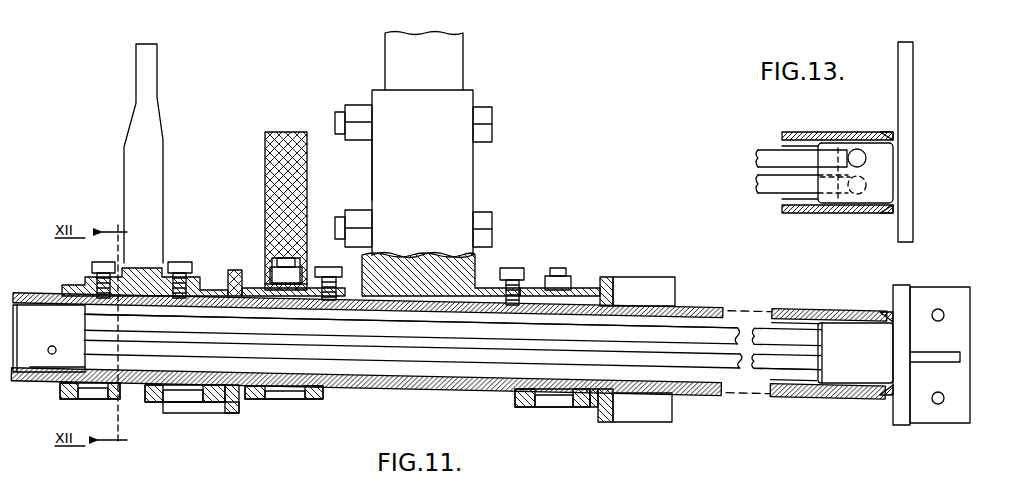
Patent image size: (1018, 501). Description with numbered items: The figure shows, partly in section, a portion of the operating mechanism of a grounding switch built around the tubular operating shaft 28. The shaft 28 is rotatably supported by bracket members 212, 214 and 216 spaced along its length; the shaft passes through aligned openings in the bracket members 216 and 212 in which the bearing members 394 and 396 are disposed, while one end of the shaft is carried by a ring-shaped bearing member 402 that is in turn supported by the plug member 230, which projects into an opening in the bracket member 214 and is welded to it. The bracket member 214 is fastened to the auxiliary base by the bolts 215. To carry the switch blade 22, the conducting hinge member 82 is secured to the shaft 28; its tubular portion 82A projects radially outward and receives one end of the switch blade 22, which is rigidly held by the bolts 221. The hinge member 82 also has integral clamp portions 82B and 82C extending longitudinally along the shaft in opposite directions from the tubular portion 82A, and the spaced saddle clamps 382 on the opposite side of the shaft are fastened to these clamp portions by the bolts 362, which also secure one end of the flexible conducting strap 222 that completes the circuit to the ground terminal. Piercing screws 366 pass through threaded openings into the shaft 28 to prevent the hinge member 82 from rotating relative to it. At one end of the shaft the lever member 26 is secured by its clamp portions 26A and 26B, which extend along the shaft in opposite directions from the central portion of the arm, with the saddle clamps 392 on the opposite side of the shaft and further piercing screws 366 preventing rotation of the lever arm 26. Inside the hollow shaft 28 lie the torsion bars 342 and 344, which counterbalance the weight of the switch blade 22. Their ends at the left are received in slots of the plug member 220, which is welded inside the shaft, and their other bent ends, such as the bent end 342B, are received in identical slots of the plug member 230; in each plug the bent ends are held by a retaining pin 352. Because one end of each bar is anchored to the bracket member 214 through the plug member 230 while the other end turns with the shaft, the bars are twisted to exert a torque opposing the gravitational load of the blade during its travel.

In FIG. 11, the switch blade 22 is at (455, 67).
In FIG. 11, the lever member 26 is at (157, 76).
In FIG. 11, the clamp portion 26A is at (62, 292).
In FIG. 11, the clamp portion 26B is at (215, 306).
In FIG. 11, the operating shaft 28 is at (406, 390).
In FIG. 13, the operating shaft 28 is at (800, 132).
In FIG. 11, the conducting hinge member 82 is at (476, 172).
In FIG. 11, the tubular portion 82A is at (385, 165).
In FIG. 11, the clamp portion 82B is at (377, 300).
In FIG. 11, the clamp portion 82C is at (530, 313).
In FIG. 11, the bracket member 212 is at (605, 424).
In FIG. 11, the bracket member 214 is at (948, 293).
In FIG. 13, the bracket member 214 is at (913, 157).
In FIG. 11, the bolts 215 is at (945, 315).
In FIG. 11, the bracket member 216 is at (234, 414).
In FIG. 11, the plug member 220 is at (56, 326).
In FIG. 11, the bolts 221 is at (488, 116).
In FIG. 11, the flexible conducting strap 222 is at (265, 158).
In FIG. 11, the plug member 230 is at (878, 375).
In FIG. 13, the plug member 230 is at (893, 178).
In FIG. 11, the torsion bar 342 is at (801, 368).
In FIG. 13, the torsion bar 342 is at (758, 160).
In FIG. 13, the bent end 342B is at (850, 140).
In FIG. 11, the torsion bar 344 is at (133, 322).
In FIG. 13, the torsion bar 344 is at (758, 185).
In FIG. 11, the retaining pin 352 is at (50, 353).
In FIG. 11, the bolts 362 is at (262, 258).
In FIG. 11, the piercing screws 366 is at (96, 263).
In FIG. 11, the saddle clamps 382 is at (313, 401).
In FIG. 11, the saddle clamps 392 is at (66, 397).
In FIG. 11, the bearing member 394 is at (232, 271).
In FIG. 11, the bearing member 396 is at (591, 408).
In FIG. 11, the ring-shaped bearing member 402 is at (884, 312).
In FIG. 13, the ring-shaped bearing member 402 is at (893, 209).